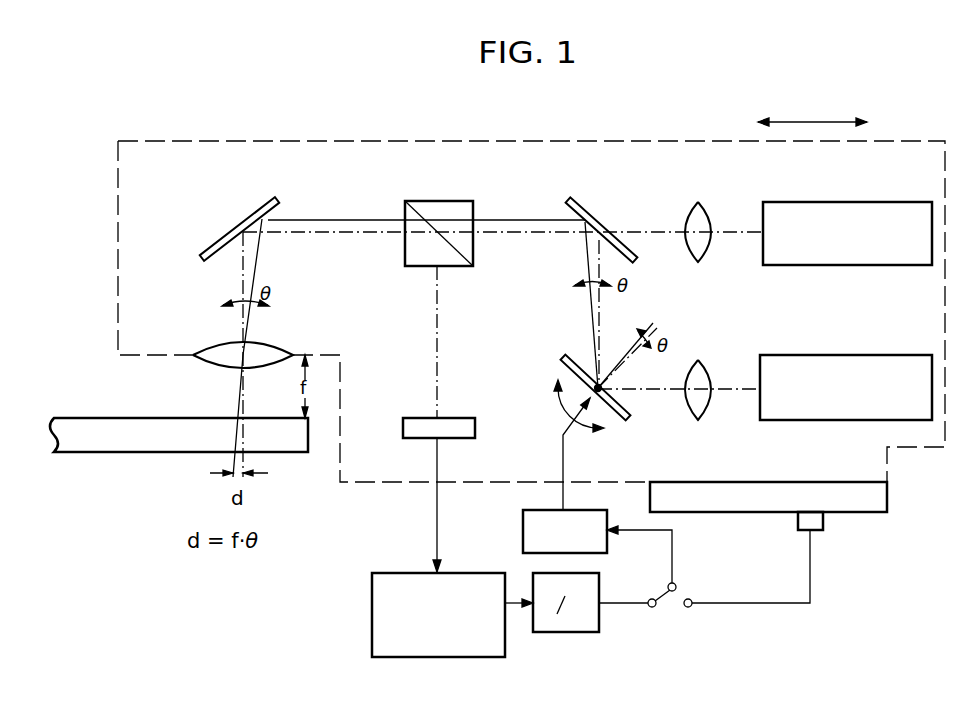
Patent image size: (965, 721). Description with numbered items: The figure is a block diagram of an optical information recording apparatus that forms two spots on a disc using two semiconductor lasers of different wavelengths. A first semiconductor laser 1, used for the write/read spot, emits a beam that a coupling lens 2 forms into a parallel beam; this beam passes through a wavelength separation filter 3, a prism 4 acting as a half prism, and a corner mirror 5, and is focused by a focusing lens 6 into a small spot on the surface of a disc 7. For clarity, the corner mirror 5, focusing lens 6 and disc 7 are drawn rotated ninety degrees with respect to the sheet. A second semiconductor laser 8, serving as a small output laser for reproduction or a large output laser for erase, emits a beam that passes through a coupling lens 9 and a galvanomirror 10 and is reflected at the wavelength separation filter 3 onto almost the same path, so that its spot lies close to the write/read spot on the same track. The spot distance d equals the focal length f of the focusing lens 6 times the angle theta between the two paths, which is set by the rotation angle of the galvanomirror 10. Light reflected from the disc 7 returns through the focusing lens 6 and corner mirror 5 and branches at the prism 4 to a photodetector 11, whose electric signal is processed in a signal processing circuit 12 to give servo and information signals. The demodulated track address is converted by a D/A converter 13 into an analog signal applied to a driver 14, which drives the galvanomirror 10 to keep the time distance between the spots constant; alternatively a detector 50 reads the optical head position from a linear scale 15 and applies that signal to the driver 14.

The first semiconductor laser 1 is at (820, 201).
The coupling lens 2 is at (698, 203).
The wavelength separation filter 3 is at (587, 200).
The prism 4 is at (460, 201).
The corner mirror 5 is at (248, 218).
The focusing lens 6 is at (205, 347).
The disc 7 is at (90, 418).
The second semiconductor laser 8 is at (835, 355).
The coupling lens 9 is at (698, 360).
The galvanomirror 10 is at (565, 357).
The photodetector 11 is at (462, 418).
The signal processing circuit 12 is at (483, 657).
The D/A converter 13 is at (575, 632).
The driver 14 is at (523, 540).
The linear scale 15 is at (840, 482).
The detector 50 is at (823, 522).